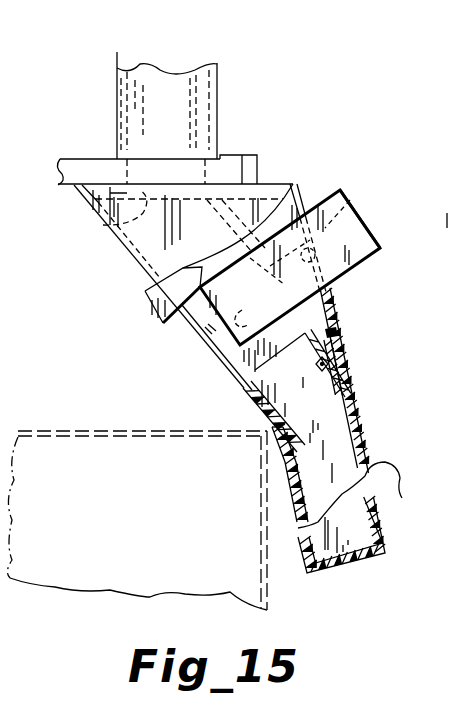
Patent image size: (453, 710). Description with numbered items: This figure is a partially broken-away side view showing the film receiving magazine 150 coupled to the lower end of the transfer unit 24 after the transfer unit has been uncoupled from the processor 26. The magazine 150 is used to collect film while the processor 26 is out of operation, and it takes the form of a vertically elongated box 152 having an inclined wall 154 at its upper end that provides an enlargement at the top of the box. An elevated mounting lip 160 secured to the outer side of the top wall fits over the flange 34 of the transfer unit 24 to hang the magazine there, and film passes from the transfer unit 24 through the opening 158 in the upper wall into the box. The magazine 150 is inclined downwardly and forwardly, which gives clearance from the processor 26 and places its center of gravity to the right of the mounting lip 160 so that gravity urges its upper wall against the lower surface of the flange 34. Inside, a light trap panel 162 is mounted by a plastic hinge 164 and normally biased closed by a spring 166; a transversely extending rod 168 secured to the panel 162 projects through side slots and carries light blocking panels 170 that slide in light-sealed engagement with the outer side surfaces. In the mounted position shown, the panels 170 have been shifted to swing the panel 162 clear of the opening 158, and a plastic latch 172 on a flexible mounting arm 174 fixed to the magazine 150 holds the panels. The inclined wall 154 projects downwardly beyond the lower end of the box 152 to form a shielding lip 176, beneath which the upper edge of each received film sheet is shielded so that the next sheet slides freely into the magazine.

The transfer unit 24 is at (221, 93).
The flange 34 is at (111, 160).
The mounting lip 160 is at (241, 157).
The flexible mounting arm 174 is at (283, 197).
The rod 168 is at (358, 195).
The light blocking panels 170 is at (385, 239).
The opening 158 is at (104, 225).
The latch 172 is at (149, 294).
The spring 166 is at (208, 338).
The panel 162 is at (333, 340).
The plastic hinge 164 is at (344, 362).
The film receiving magazine 150 is at (356, 397).
The box 152 is at (402, 498).
The inclined wall 154 is at (248, 398).
The shielding lip 176 is at (295, 449).
The processor 26 is at (112, 456).